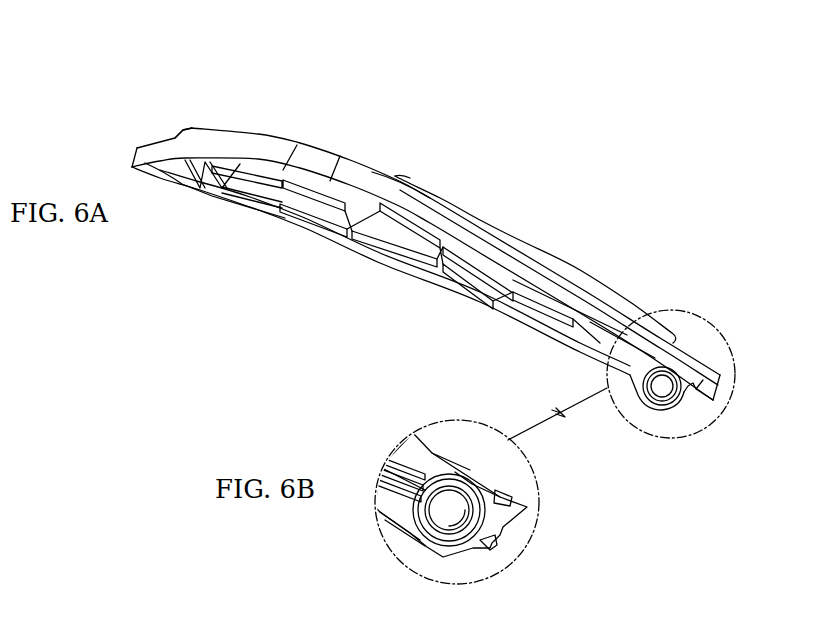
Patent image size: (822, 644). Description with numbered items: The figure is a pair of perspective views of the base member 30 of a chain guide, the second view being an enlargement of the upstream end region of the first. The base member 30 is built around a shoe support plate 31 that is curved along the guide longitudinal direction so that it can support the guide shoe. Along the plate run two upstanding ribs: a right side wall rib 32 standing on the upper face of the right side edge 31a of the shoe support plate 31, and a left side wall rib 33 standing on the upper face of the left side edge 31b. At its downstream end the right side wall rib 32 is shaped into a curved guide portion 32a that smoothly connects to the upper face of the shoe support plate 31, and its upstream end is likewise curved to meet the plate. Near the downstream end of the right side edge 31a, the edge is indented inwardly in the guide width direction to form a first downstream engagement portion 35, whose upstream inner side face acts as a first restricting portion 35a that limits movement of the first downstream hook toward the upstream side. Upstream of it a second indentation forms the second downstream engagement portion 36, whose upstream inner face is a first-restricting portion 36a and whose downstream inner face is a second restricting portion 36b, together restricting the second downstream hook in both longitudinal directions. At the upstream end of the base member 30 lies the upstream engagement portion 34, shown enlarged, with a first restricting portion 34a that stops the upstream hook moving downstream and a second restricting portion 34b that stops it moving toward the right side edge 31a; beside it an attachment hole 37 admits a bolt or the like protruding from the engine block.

In FIG. 6A, the base member 30 is at (86, 76).
In FIG. 6A, the shoe support plate 31 is at (263, 172).
In FIG. 6A, the right side edge 31a is at (368, 170).
In FIG. 6A, the left side edge 31b is at (315, 185).
In FIG. 6A, the right side wall rib 32 is at (527, 237).
In FIG. 6A, the curved guide portion 32a is at (410, 176).
In FIG. 6A, the left side wall rib 33 is at (485, 245).
In FIG. 6A, the upstream engagement portion 34 is at (711, 416).
In FIG. 6B, the upstream engagement portion 34 is at (525, 543).
In FIG. 6B, the first restricting portion 34a is at (512, 500).
In FIG. 6B, the second restricting portion 34b is at (495, 530).
In FIG. 6A, the first downstream engagement portion 35 is at (165, 128).
In FIG. 6A, the first restricting portion 35a is at (185, 129).
In FIG. 6A, the second downstream engagement portion 36 is at (326, 146).
In FIG. 6A, the first-restricting portion 36a is at (338, 158).
In FIG. 6A, the second restricting portion 36b is at (297, 145).
In FIG. 6A, the attachment hole 37 is at (663, 388).
In FIG. 6B, the attachment hole 37 is at (449, 510).